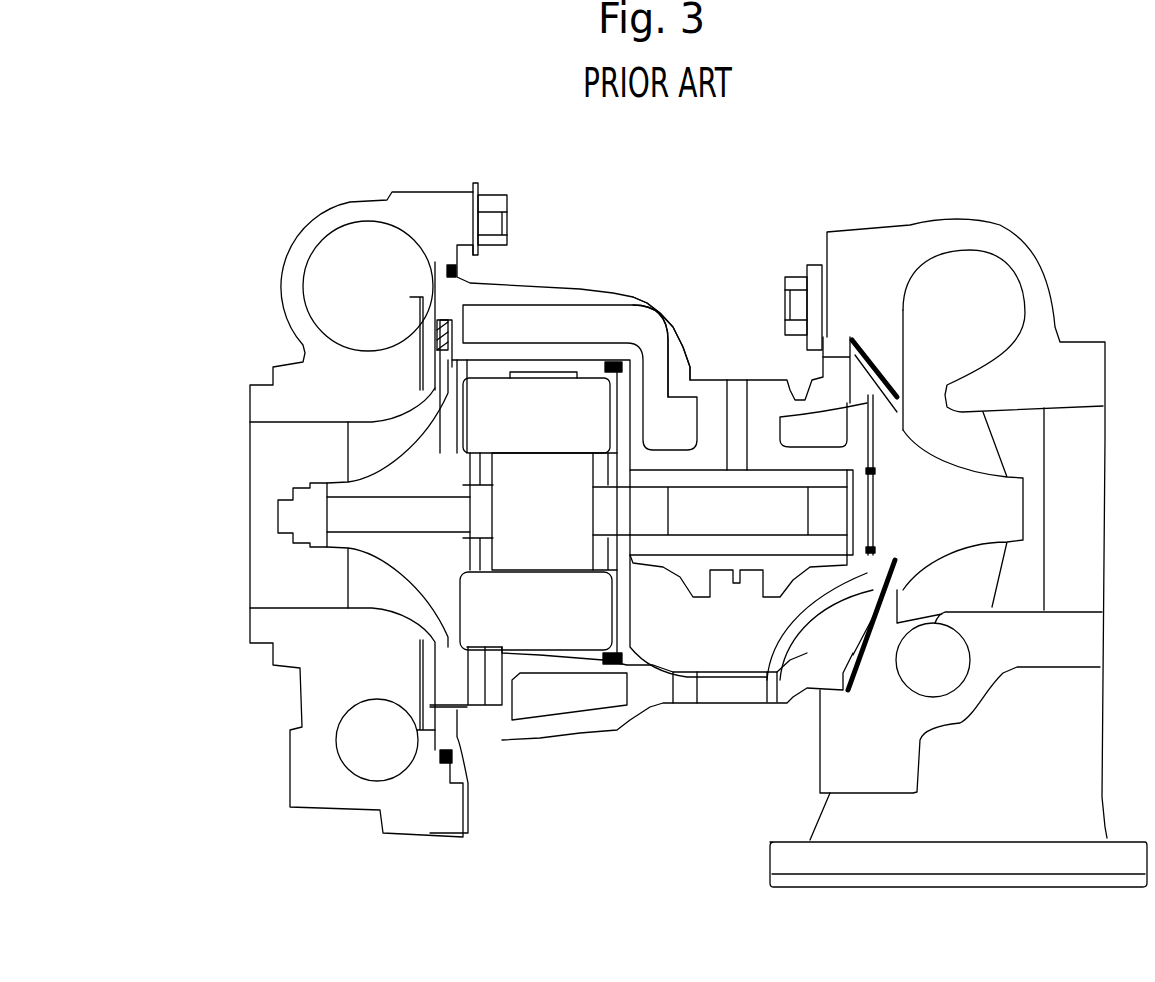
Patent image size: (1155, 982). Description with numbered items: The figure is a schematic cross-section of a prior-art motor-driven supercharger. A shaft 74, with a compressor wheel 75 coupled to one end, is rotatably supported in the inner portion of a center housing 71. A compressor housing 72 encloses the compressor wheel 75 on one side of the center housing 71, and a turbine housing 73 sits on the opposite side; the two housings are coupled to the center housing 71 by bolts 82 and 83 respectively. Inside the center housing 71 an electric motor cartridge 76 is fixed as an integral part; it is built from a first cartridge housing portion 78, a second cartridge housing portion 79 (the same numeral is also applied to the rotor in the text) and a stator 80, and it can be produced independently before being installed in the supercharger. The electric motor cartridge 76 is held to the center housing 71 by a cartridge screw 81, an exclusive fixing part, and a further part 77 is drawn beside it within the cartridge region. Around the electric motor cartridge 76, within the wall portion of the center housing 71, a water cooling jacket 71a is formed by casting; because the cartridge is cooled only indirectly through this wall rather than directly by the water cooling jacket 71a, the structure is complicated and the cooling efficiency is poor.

The center housing 71 is at (642, 315).
The water cooling jacket 71a is at (642, 343).
The compressor housing 72 is at (413, 215).
The turbine housing 73 is at (898, 252).
The shaft 74 is at (368, 517).
The compressor wheel 75 is at (395, 542).
The electric motor cartridge 76 is at (540, 340).
The bearing 77 is at (497, 368).
The first cartridge housing portion 78 is at (590, 368).
The second cartridge housing portion 79 is at (555, 526).
The stator 80 is at (555, 438).
The cartridge screw 81 is at (437, 340).
The bolt 82 is at (503, 198).
The bolt 83 is at (788, 280).